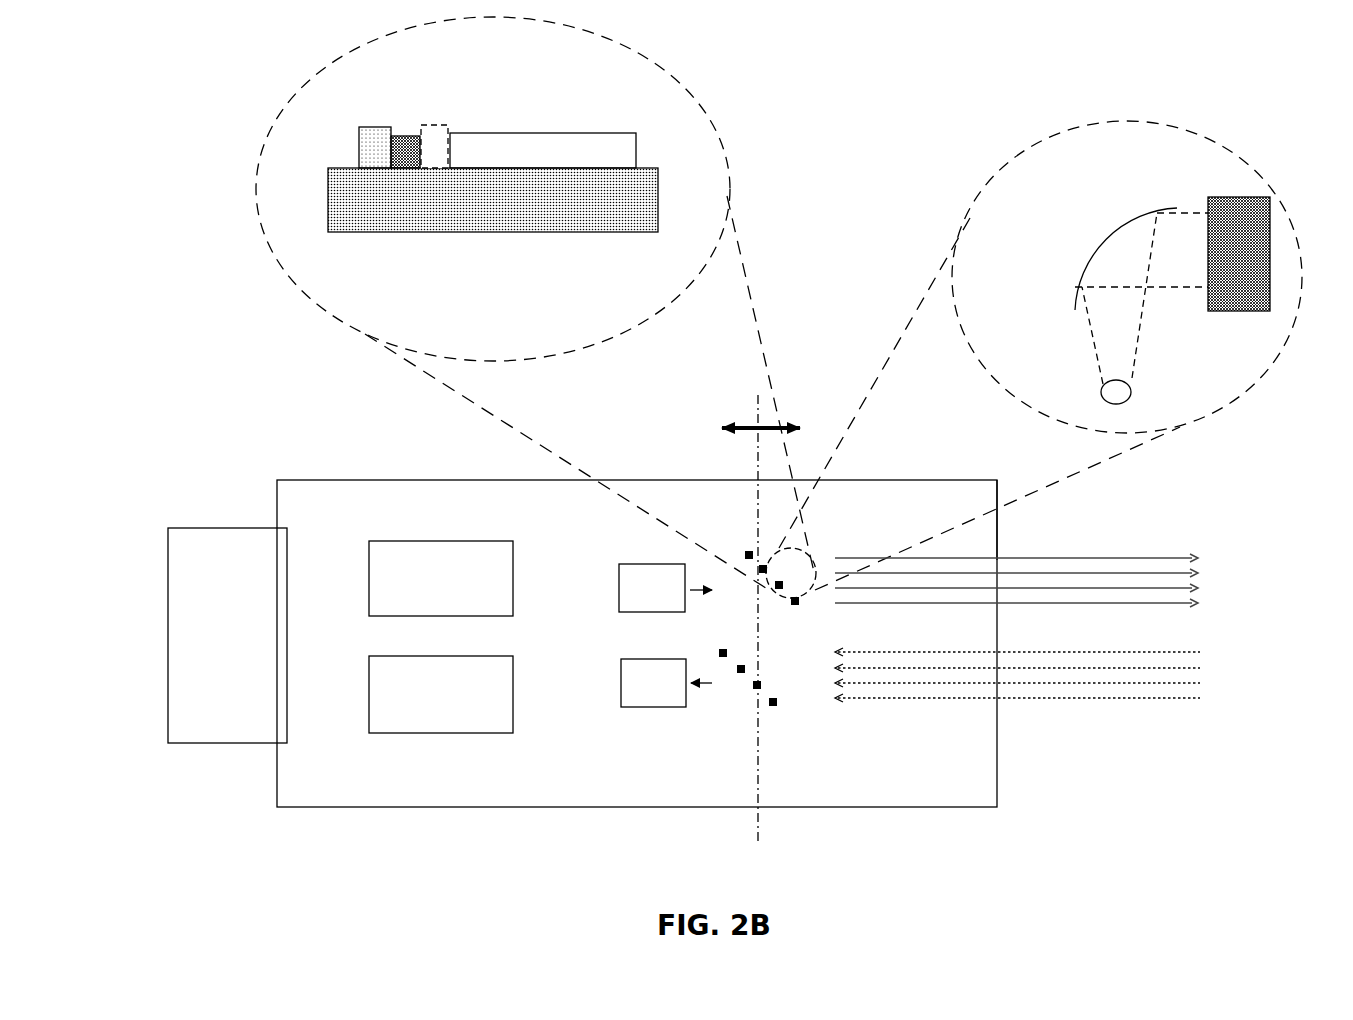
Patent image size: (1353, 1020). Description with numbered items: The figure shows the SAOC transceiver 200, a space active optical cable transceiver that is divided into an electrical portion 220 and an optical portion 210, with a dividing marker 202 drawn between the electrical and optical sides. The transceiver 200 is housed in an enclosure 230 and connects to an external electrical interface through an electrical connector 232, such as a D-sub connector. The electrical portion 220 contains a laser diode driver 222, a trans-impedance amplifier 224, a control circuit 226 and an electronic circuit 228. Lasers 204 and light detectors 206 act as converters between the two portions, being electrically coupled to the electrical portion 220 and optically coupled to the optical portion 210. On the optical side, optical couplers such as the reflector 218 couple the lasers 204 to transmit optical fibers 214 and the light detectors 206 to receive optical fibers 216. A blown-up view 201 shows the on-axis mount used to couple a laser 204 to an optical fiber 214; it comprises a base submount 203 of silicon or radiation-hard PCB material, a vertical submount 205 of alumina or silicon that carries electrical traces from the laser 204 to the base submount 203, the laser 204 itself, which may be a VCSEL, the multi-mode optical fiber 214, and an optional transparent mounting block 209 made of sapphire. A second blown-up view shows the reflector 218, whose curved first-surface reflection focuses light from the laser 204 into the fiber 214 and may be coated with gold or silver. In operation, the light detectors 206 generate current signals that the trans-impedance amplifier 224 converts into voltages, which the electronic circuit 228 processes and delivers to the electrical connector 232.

The SAOC transceiver 200 is at (272, 440).
The blown-up view 201 is at (265, 140).
The electrical-optical boundary 202 is at (758, 633).
The base submount 203 is at (658, 190).
The laser 204 is at (746, 545).
The vertical submount 205 is at (359, 128).
The light detector 206 is at (742, 682).
The transparent mounting block 209 is at (445, 125).
The optical portion 210 is at (832, 446).
The optical fiber 214 is at (659, 114).
The optical fibers 216 is at (1017, 675).
The reflector 218 is at (1125, 228).
The electrical portion 220 is at (440, 645).
The laser diode driver 222 is at (652, 564).
The trans-impedance amplifier 224 is at (657, 707).
The control circuit 226 is at (430, 541).
The electronic circuit 228 is at (445, 733).
The enclosure 230 is at (997, 479).
The electrical connector 232 is at (227, 635).